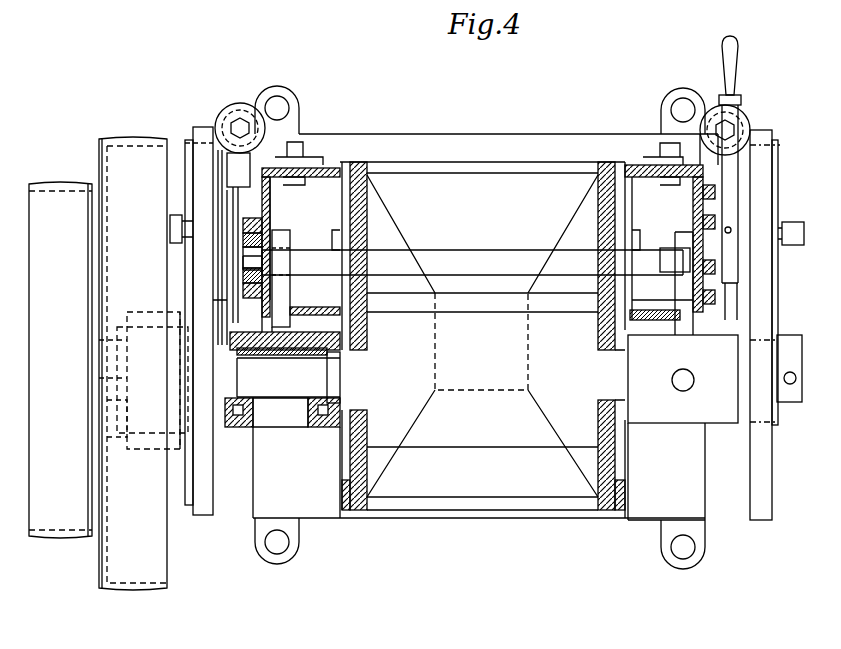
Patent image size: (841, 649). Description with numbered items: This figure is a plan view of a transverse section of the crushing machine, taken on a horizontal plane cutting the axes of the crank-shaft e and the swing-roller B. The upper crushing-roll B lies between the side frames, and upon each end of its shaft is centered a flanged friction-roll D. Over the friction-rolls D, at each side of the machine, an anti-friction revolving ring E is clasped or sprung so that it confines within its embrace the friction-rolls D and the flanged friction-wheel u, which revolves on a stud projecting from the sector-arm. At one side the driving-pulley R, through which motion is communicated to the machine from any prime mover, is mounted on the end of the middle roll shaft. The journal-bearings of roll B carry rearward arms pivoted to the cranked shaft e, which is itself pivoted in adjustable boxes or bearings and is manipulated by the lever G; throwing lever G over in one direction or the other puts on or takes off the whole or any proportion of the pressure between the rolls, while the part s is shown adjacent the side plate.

The driving-pulley R is at (133, 363).
The friction-wheel u is at (480, 322).
The anti-friction revolving ring E is at (213, 505).
The friction-roll D is at (228, 427).
The crank-shaft e is at (466, 262).
The upper crushing-roll B is at (482, 336).
The lever G is at (738, 178).
The block s is at (802, 340).